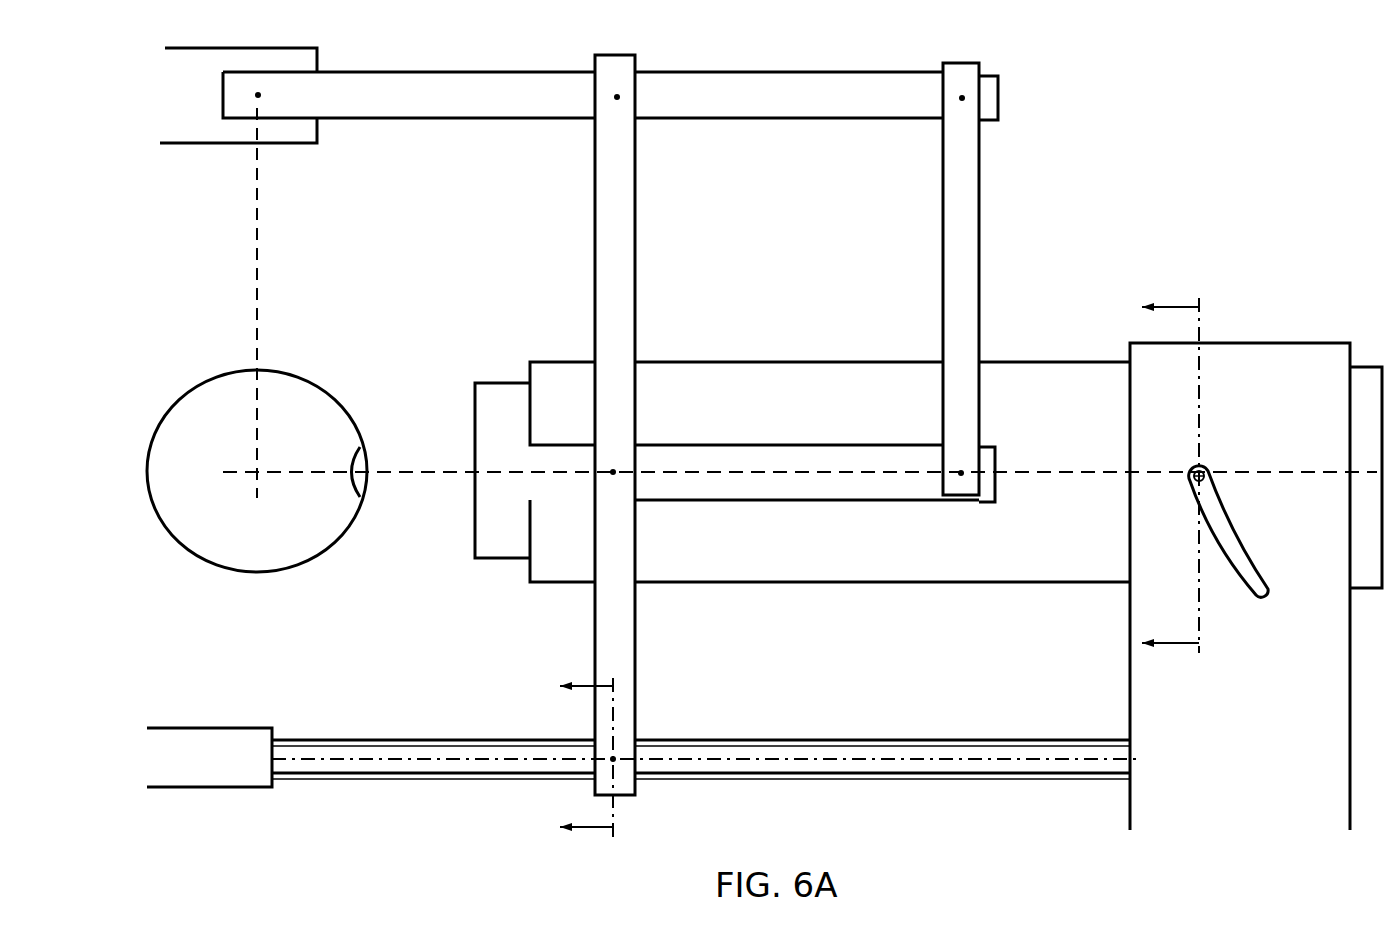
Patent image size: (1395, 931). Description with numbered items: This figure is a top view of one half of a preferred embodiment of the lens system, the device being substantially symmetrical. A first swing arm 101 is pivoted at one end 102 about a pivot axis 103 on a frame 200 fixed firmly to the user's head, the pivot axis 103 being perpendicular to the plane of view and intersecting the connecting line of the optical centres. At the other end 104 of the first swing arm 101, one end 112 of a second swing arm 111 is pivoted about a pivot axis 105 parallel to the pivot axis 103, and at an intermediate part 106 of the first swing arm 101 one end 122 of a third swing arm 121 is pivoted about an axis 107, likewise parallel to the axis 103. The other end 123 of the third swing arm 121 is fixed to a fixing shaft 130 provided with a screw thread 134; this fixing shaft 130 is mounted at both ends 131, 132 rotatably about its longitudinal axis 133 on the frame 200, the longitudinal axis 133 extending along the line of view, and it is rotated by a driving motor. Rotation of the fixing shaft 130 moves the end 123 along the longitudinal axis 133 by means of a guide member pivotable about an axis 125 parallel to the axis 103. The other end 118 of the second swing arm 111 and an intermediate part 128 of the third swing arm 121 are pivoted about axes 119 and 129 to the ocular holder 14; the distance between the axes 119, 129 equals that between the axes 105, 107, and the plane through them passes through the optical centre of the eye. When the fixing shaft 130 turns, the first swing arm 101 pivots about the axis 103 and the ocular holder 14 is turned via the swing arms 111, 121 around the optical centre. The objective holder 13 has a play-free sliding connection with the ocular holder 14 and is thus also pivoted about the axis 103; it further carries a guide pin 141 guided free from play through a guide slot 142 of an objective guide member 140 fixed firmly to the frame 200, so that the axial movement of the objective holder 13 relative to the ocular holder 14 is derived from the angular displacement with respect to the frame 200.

The objective holder 13 is at (1028, 387).
The ocular holder 14 is at (493, 523).
The first swing arm 101 is at (562, 95).
The one end of first swing arm 102 is at (337, 95).
The pivot axis 103 is at (258, 95).
The other end of first swing arm 104 is at (920, 95).
The pivot axis 105 is at (962, 98).
The intermediate part of first swing arm 106 is at (667, 95).
The pivot axis 107 is at (617, 97).
The second swing arm 111 is at (960, 342).
The one end of second swing arm 112 is at (962, 137).
The other end of second swing arm 118 is at (957, 440).
The pivot axis 119 is at (961, 473).
The third swing arm 121 is at (615, 340).
The one end of third swing arm 122 is at (617, 137).
The other end of third swing arm 123 is at (618, 730).
The pivot axis 125 is at (613, 759).
The intermediate part of third swing arm 128 is at (612, 428).
The pivot axis 129 is at (613, 472).
The fixing shaft 130 is at (788, 760).
The end of fixing shaft 131 is at (325, 750).
The end of fixing shaft 132 is at (1103, 753).
The longitudinal axis 133 is at (923, 747).
The screw thread 134 is at (483, 742).
The objective guide member 140 is at (1268, 457).
The guide pin 141 is at (1203, 470).
The guide slot 142 is at (1238, 547).
The frame 200 is at (202, 108).